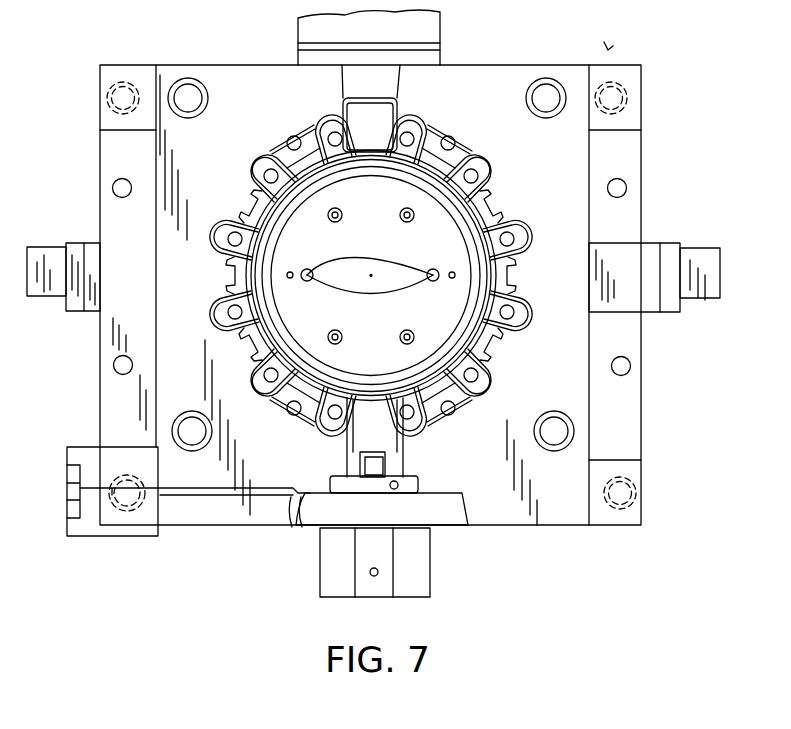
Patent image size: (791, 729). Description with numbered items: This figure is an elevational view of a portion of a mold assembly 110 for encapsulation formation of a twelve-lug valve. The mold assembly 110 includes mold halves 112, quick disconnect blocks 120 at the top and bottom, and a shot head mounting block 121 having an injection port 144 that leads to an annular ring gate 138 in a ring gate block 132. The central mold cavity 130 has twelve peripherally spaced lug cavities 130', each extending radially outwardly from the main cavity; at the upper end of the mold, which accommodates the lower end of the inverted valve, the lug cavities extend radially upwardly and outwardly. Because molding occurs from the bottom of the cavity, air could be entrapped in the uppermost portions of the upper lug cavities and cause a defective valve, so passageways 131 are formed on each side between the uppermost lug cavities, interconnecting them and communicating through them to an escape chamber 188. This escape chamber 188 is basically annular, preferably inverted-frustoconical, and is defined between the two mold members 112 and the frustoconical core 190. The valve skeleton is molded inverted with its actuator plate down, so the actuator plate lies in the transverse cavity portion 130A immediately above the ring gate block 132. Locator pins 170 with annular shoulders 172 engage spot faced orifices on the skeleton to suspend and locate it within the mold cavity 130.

The mold assembly 110 is at (608, 50).
The mold halves 112 is at (492, 72).
The quick disconnect blocks 120 is at (436, 33).
The shot head mounting block 121 is at (140, 535).
The mold cavity 130 is at (396, 287).
The lug cavities 130' is at (396, 264).
The transverse cavity portion 130A is at (418, 486).
The passageways 131 is at (275, 150).
The ring gate block 132 is at (310, 525).
The annular ring gate 138 is at (300, 506).
The injection port 144 is at (120, 500).
The locator pins 170 is at (343, 297).
The annular shoulders 172 is at (340, 250).
The escape chamber 188 is at (400, 78).
The frustoconical core 190 is at (338, 78).